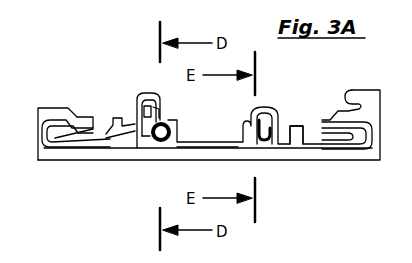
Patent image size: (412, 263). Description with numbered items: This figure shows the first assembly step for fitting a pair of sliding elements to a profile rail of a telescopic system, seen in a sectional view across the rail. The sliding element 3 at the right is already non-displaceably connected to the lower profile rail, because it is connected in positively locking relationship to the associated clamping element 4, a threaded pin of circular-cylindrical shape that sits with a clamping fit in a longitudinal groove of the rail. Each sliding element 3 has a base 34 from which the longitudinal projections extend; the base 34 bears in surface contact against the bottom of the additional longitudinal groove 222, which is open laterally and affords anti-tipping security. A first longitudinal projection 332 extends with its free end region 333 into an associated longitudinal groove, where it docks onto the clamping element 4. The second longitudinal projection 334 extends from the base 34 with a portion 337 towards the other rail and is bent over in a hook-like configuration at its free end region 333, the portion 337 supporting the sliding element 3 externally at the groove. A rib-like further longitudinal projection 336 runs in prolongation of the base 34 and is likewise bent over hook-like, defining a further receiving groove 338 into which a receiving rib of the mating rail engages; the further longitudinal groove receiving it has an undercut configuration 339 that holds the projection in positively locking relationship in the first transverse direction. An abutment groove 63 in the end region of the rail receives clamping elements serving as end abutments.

The sliding element 3 is at (92, 111).
The clamping element 4 is at (250, 140).
The base 34 is at (138, 150).
The abutment groove 63 is at (356, 95).
The additional longitudinal groove 222 is at (122, 136).
The first longitudinal projection 332 is at (115, 125).
The free end region 333 is at (158, 114).
The second longitudinal projection 334 is at (138, 93).
The further longitudinal projection 336 is at (55, 148).
The portion 337 is at (137, 112).
The further receiving groove 338 is at (150, 108).
The undercut configuration 339 is at (50, 120).